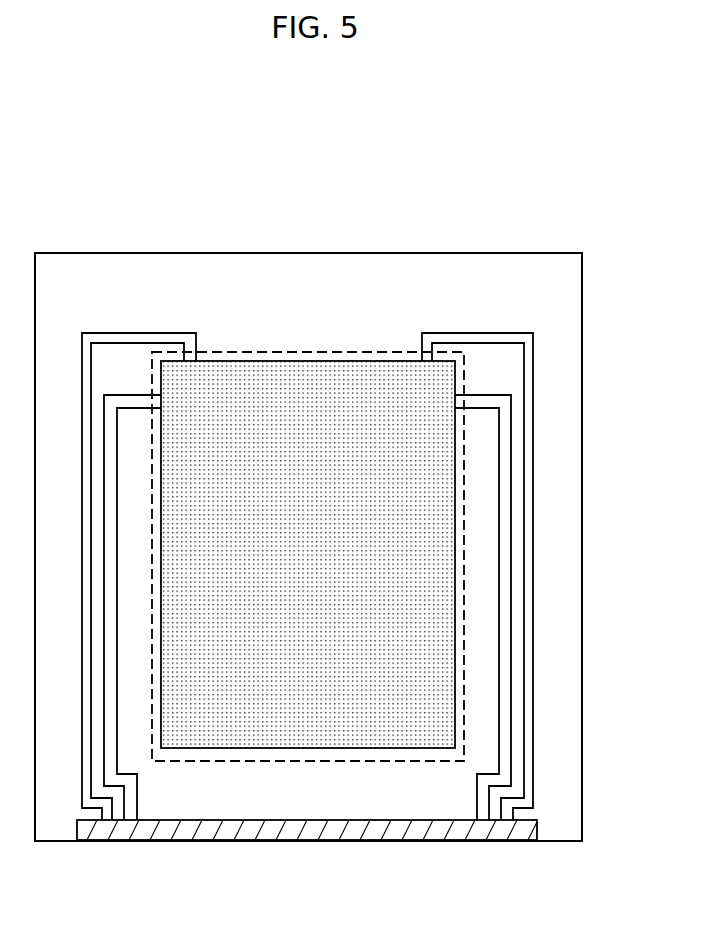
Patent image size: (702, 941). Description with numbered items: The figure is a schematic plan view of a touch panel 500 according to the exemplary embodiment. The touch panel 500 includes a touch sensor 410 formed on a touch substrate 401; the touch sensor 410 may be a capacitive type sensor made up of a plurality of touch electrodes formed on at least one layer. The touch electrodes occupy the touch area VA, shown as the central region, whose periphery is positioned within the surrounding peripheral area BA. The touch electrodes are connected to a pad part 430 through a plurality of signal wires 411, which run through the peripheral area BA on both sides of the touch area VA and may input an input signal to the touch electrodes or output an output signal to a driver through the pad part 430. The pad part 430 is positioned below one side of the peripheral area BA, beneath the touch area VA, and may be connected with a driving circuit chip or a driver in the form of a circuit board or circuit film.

The touch panel 500 is at (248, 173).
The touch substrate 401 is at (518, 253).
The peripheral area BA is at (387, 268).
The touch area VA is at (342, 761).
The touch sensor 410 is at (250, 748).
The signal wires 411 is at (116, 749).
The pad part 430 is at (413, 832).